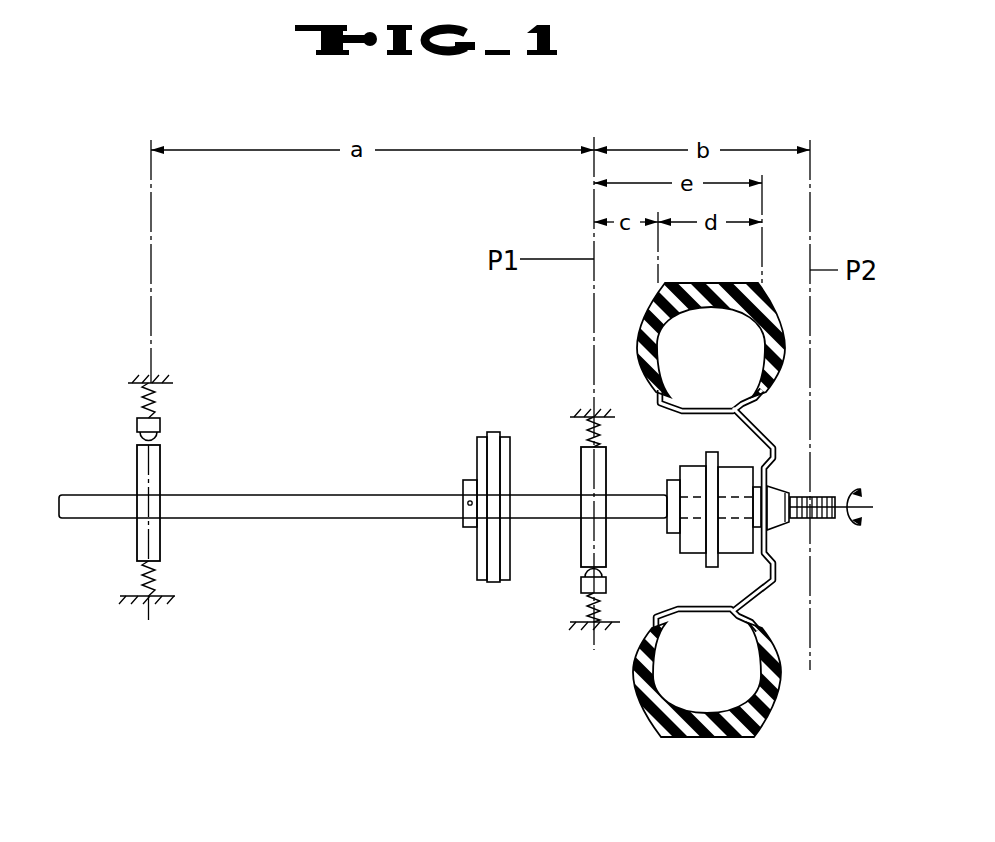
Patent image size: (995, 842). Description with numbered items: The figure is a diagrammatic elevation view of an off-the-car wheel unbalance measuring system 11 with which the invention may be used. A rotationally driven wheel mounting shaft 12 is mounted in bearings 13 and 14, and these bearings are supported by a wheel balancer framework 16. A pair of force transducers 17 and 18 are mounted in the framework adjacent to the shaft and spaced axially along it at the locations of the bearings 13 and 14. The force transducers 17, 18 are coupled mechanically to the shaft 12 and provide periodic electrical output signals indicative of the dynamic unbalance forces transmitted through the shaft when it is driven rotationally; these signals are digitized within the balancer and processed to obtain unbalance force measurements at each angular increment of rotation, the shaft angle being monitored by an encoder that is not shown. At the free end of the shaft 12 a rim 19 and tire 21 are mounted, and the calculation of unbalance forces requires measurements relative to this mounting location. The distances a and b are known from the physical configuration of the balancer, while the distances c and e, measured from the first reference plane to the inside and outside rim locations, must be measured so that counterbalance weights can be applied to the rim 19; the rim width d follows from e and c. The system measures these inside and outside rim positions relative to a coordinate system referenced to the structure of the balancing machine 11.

The off-the-car wheel unbalance measuring system 11 is at (506, 108).
The wheel mounting shaft 12 is at (236, 519).
The bearing 13 is at (161, 456).
The bearing 14 is at (607, 462).
The wheel balancer framework 16 is at (168, 384).
The force transducer 17 is at (137, 428).
The force transducer 18 is at (580, 588).
The rim 19 is at (763, 598).
The tire 21 is at (769, 703).